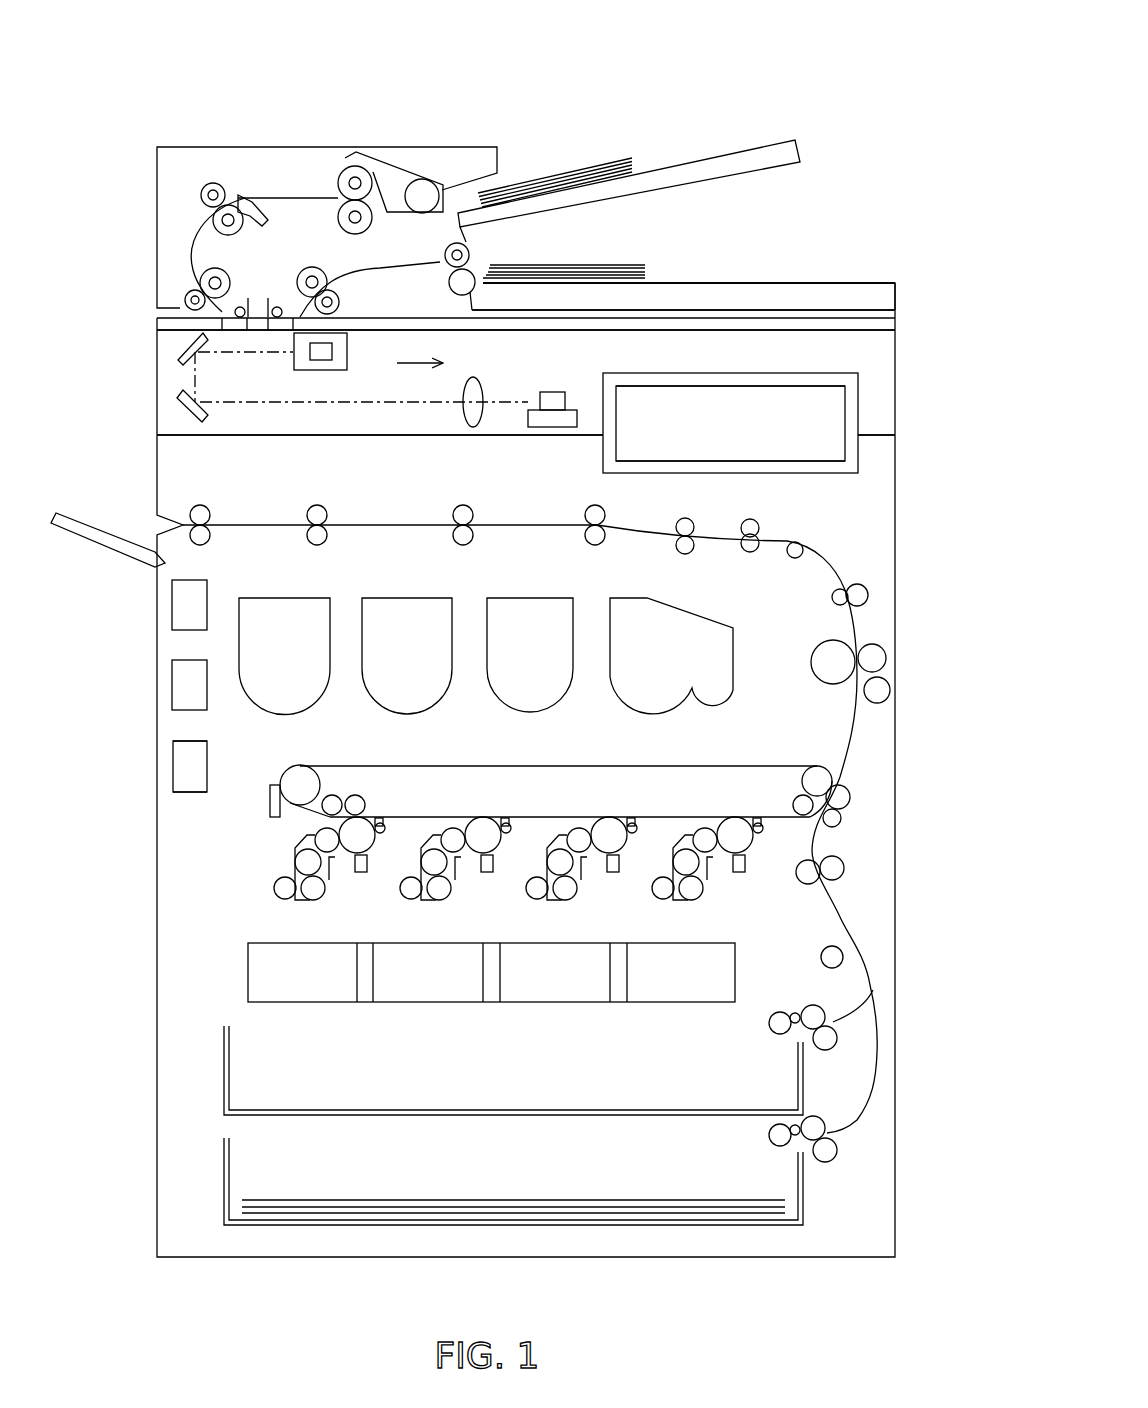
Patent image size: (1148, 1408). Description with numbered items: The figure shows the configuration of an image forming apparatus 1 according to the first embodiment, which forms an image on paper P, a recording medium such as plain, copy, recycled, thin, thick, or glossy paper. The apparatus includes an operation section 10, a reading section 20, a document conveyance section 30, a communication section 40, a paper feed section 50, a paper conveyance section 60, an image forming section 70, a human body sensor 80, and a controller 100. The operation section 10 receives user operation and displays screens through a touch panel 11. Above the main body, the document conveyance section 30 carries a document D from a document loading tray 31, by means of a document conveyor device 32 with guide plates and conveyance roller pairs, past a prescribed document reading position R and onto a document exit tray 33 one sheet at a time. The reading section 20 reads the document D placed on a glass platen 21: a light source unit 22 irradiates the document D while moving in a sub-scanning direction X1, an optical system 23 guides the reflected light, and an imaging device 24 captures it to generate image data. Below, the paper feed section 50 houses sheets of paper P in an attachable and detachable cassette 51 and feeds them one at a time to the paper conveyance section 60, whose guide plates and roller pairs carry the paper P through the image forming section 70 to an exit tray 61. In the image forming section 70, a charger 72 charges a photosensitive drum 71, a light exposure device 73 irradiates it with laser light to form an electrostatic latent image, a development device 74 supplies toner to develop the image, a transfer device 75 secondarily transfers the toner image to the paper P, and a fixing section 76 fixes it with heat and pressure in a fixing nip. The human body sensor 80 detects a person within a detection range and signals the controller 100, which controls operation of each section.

The image forming apparatus 1 is at (780, 75).
The operation section 10 is at (860, 410).
The touch panel 11 is at (757, 385).
The reading section 20 is at (883, 375).
The platen 21 is at (788, 325).
The light source unit 22 is at (348, 352).
The optical system 23 is at (290, 407).
The imaging device 24 is at (583, 417).
The document conveyance section 30 is at (668, 127).
The document loading tray 31 is at (730, 150).
The document conveyor device 32 is at (245, 170).
The document exit tray 33 is at (663, 282).
The communication section 40 is at (168, 617).
The paper feed section 50 is at (213, 1177).
The cassette 51 is at (224, 1063).
The paper conveyance section 60 is at (355, 515).
The exit tray 61 is at (93, 525).
The image forming section 70 is at (132, 885).
The photosensitive drum 71 is at (373, 852).
The charger 72 is at (357, 875).
The light exposure device 73 is at (740, 963).
The development device 74 is at (298, 902).
The transfer device 75 is at (690, 757).
The fixing section 76 is at (865, 637).
The human body sensor 80 is at (168, 682).
The controller 100 is at (209, 750).
The document D is at (608, 160).
The paper P is at (297, 1213).
The document reading position R is at (253, 338).
The sub-scanning direction X1 is at (417, 363).